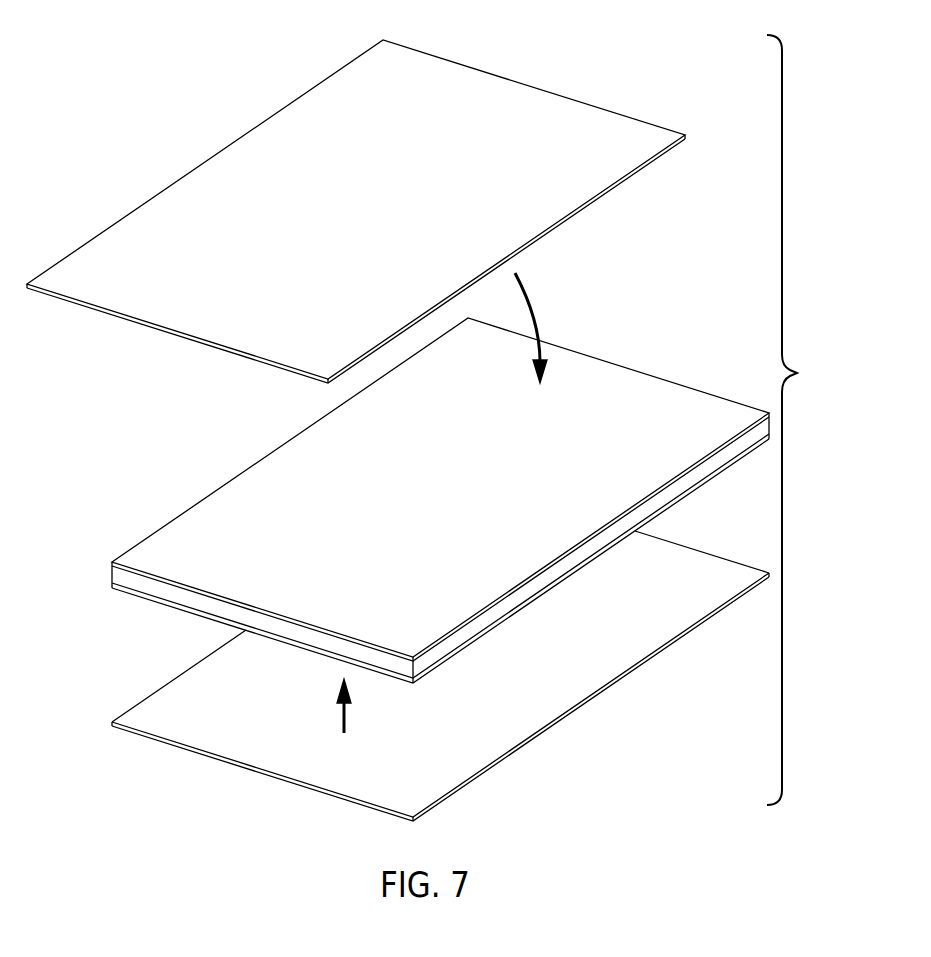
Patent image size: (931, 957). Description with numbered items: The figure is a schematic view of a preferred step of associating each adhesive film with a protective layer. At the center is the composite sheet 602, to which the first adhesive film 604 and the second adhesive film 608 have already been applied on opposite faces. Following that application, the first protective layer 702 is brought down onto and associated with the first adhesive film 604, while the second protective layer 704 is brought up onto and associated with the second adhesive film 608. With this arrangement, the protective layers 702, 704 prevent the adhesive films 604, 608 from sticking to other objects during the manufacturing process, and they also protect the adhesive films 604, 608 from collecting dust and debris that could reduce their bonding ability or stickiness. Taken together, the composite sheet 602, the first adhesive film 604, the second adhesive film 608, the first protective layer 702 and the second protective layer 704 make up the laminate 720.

The first protective layer 702 is at (248, 131).
The second protective layer 704 is at (523, 742).
The composite sheet 602 is at (112, 575).
The first adhesive film 604 is at (662, 388).
The second adhesive film 608 is at (692, 490).
The laminate 720 is at (802, 420).